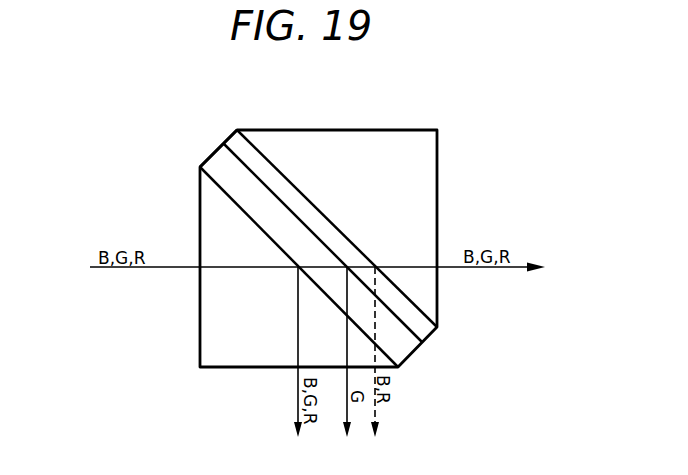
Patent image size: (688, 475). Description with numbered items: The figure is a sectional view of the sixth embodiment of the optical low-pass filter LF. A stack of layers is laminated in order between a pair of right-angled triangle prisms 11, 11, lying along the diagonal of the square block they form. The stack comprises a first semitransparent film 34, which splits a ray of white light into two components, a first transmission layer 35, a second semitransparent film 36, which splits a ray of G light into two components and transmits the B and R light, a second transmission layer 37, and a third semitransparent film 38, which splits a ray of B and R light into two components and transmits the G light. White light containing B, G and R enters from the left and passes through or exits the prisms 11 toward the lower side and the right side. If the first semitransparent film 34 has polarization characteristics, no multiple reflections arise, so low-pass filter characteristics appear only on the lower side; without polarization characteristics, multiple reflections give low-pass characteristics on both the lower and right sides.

The right-angled triangle prism 11 is at (437, 178).
The first semitransparent film 34 is at (264, 233).
The first transmission layer 35 is at (207, 162).
The second semitransparent film 36 is at (250, 173).
The second transmission layer 37 is at (230, 137).
The third semitransparent film 38 is at (299, 189).
The optical low-pass filter LF is at (313, 125).